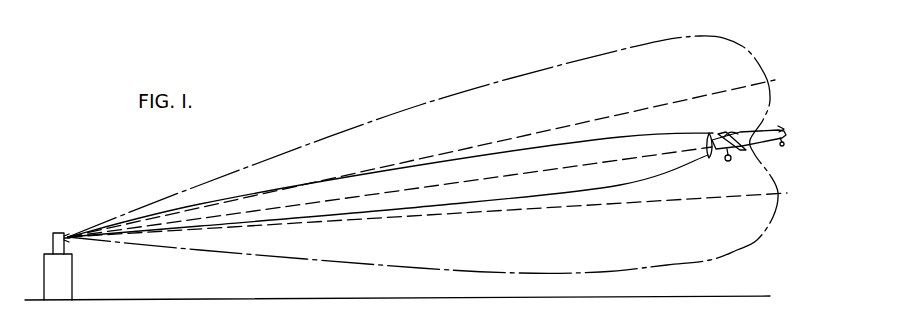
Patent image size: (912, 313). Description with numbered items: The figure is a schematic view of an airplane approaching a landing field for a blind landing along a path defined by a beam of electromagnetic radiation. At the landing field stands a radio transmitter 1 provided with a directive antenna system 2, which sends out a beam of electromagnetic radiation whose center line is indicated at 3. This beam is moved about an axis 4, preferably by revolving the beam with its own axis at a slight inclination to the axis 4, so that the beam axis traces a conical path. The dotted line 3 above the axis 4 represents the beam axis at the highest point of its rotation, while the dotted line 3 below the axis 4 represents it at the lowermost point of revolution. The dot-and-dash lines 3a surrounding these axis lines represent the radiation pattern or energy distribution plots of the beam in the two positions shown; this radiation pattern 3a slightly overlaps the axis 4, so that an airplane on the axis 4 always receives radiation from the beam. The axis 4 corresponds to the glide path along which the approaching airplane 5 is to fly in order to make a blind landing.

The radio transmitter 1 is at (44, 268).
The directive antenna system 2 is at (68, 235).
The center line of the beam 3 is at (628, 112).
The radiation pattern 3a is at (562, 62).
The axis 4 is at (674, 152).
The airplane 5 is at (742, 133).